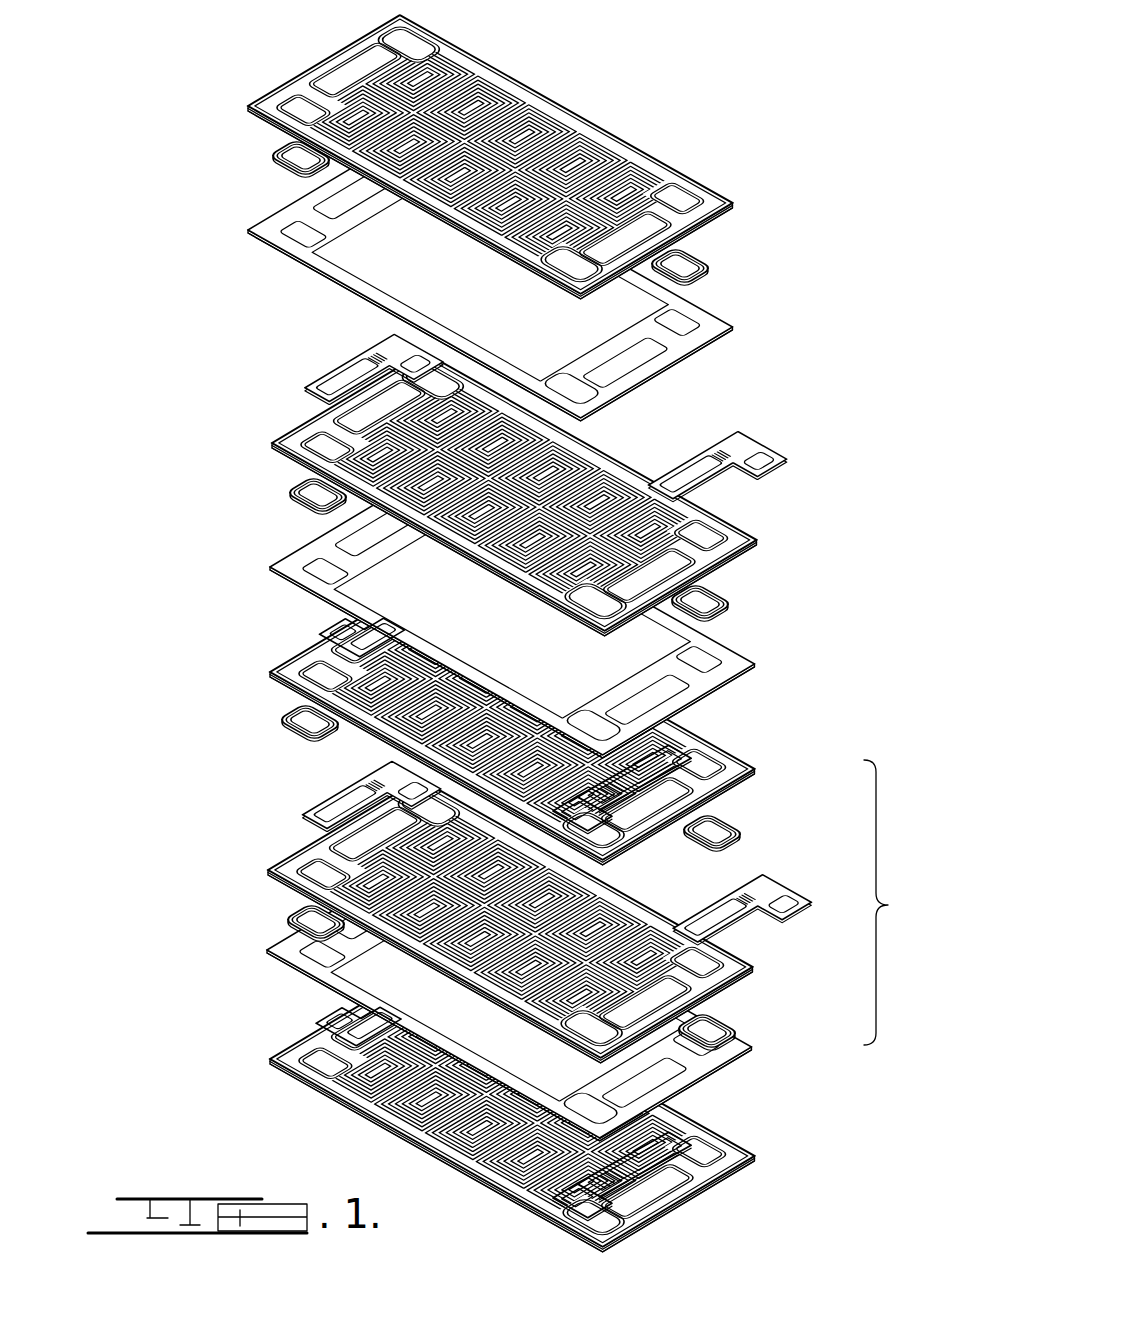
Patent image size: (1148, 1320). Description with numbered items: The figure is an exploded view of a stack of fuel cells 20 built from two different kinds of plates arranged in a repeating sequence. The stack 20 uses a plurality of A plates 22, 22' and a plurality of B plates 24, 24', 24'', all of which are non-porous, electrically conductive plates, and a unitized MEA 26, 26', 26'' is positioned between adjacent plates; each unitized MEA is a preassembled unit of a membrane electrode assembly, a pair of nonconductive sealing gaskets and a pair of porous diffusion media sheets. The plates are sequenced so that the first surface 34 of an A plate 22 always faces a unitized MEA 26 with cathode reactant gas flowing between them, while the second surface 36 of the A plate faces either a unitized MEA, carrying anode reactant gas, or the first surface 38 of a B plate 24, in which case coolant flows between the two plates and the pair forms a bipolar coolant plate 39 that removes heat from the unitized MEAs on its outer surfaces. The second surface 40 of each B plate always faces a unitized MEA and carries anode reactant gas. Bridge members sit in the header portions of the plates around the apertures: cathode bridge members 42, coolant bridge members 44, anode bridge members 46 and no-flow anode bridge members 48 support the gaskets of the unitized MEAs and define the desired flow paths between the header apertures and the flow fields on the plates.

The stack of fuel cells 20 is at (798, 116).
The A plate 22 is at (493, 494).
The A plate 22' is at (479, 921).
The B plate 24 is at (490, 157).
The B plate 24' is at (476, 723).
The B plate 24'' is at (476, 1110).
The unitized MEA 26 is at (469, 280).
The unitized MEA 26' is at (469, 617).
The unitized MEA 26'' is at (528, 1000).
The first surface 34 is at (579, 453).
The second surface 36 is at (511, 585).
The first surface 38 is at (518, 99).
The bipolar coolant plate 39 is at (903, 902).
The second surface 40 is at (512, 267).
The cathode bridge member 42 is at (375, 352).
The coolant bridge member 44 is at (350, 640).
The anode bridge member 46 is at (272, 160).
The no-flow anode bridge member 48 is at (285, 908).